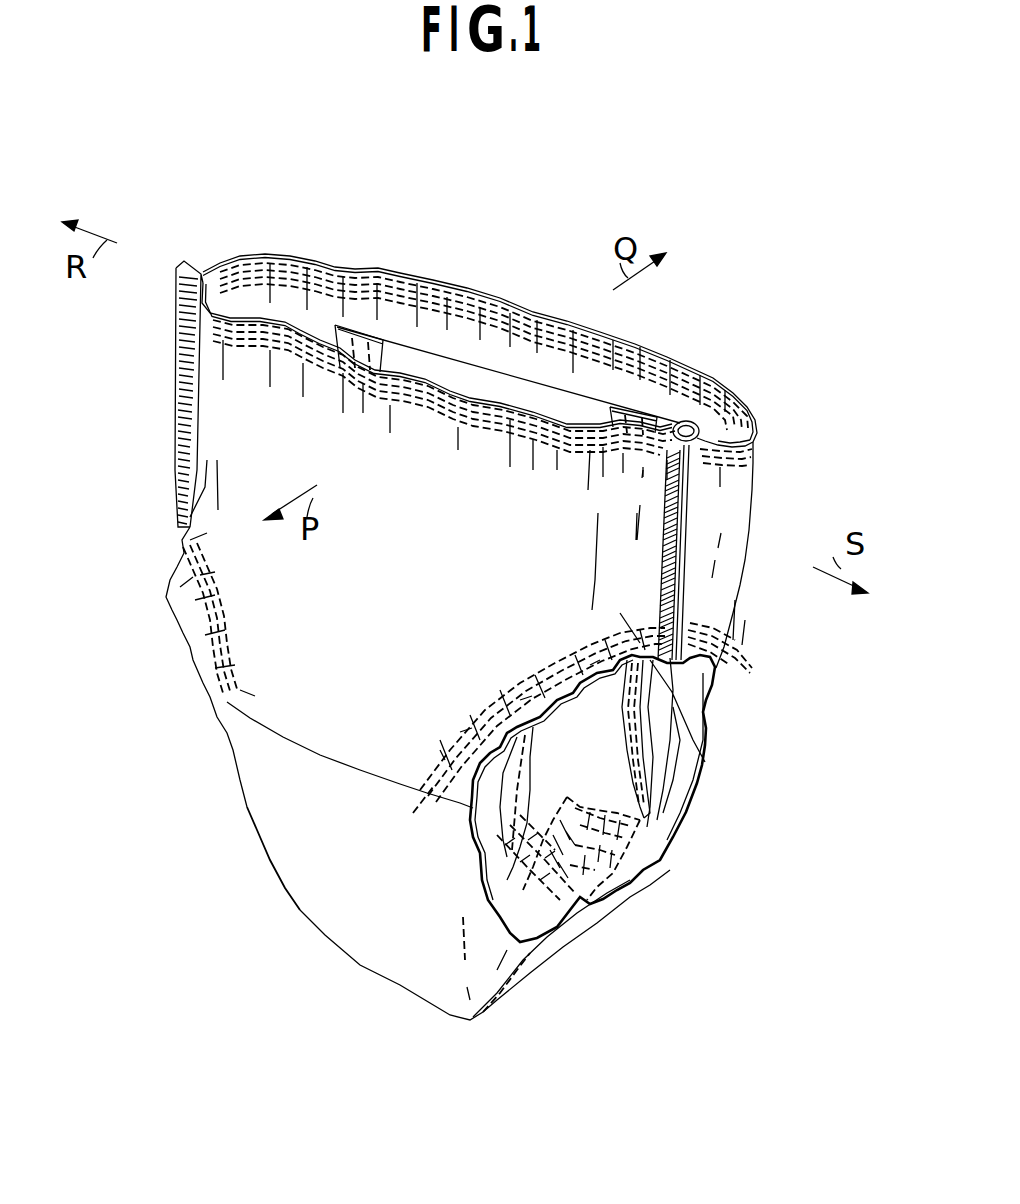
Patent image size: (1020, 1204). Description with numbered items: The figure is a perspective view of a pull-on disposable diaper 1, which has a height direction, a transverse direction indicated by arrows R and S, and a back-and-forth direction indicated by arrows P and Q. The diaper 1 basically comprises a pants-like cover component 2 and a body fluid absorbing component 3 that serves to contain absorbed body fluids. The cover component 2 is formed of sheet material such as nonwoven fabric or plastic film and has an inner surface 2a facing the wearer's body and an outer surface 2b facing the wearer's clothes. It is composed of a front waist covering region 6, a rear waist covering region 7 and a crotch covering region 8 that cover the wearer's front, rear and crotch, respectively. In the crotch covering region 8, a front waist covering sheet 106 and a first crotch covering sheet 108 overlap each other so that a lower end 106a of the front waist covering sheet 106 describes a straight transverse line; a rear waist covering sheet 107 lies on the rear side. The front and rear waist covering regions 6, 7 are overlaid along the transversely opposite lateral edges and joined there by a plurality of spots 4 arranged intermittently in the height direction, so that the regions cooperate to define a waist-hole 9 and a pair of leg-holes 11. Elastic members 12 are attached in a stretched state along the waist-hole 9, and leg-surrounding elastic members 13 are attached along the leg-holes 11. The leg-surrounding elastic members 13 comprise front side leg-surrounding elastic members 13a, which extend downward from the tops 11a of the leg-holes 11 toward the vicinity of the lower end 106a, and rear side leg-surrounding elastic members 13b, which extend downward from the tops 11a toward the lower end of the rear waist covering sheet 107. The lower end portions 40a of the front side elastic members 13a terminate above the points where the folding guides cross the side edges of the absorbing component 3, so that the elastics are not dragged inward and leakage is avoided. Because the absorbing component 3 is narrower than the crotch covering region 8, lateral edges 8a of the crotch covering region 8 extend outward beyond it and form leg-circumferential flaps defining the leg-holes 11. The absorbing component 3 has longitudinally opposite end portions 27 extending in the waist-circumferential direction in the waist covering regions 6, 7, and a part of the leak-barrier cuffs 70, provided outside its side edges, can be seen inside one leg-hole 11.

The pull-on disposable diaper 1 is at (589, 252).
The pants-like cover component 2 is at (480, 325).
The inner surface 2a is at (245, 267).
The outer surface 2b is at (207, 357).
The body fluid absorbing component 3 is at (485, 360).
The spots 4 is at (700, 583).
The front waist covering region 6 is at (213, 433).
The rear waist covering region 7 is at (753, 493).
The crotch covering region 8 is at (333, 913).
The lateral edges of the crotch covering region 8a is at (677, 775).
The waist-hole 9 is at (663, 380).
The leg-holes 11 is at (597, 762).
The tops of the leg-holes 11a is at (647, 667).
The waist elastic members 12 is at (468, 307).
The leg-surrounding elastic members 13 is at (180, 627).
The front side leg-surrounding elastic members 13a is at (527, 690).
The rear side leg-surrounding elastic members 13b is at (706, 645).
The longitudinally opposite end portions 27 is at (580, 400).
The lower end portions of the front side leg-surrounding elastic members 40a is at (409, 799).
The leak-barrier cuffs 70 is at (620, 847).
The front waist covering sheet 106 is at (273, 675).
The lower end of the front waist covering sheet 106a is at (283, 737).
The rear waist covering sheet 107 is at (727, 547).
The first crotch covering sheet 108 is at (285, 828).